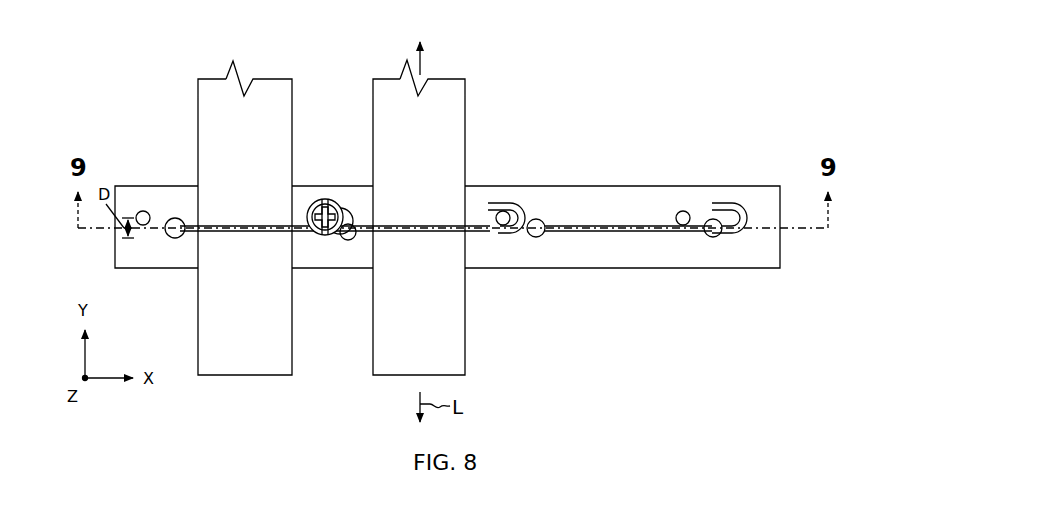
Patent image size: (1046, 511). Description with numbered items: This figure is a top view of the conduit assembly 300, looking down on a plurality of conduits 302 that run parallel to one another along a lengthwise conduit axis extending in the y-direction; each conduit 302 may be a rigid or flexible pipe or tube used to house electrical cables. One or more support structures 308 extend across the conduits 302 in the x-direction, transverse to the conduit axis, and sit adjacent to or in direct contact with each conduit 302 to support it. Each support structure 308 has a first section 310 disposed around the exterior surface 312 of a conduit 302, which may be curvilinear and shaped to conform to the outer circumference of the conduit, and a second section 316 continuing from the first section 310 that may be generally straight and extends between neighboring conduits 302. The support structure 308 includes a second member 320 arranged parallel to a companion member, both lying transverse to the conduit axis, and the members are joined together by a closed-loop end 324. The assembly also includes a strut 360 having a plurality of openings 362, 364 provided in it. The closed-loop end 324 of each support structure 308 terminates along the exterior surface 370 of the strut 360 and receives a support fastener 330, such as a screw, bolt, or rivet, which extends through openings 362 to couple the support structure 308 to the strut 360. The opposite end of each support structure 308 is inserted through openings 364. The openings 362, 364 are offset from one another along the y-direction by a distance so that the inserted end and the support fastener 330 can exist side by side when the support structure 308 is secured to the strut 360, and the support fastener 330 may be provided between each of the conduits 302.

The hanger assembly 300 is at (646, 94).
The upright post 302 is at (215, 69).
The rod 308 is at (251, 210).
The connection point 310 is at (657, 227).
The post surface 312 is at (461, 137).
The rod end 316 is at (505, 250).
The hook 320 is at (511, 201).
The hook end 324 is at (544, 212).
The coupler 330 is at (318, 200).
The frame bar 360 is at (738, 272).
The hole 362 is at (145, 206).
The pin 364 is at (174, 242).
The spacing region 370 is at (634, 215).